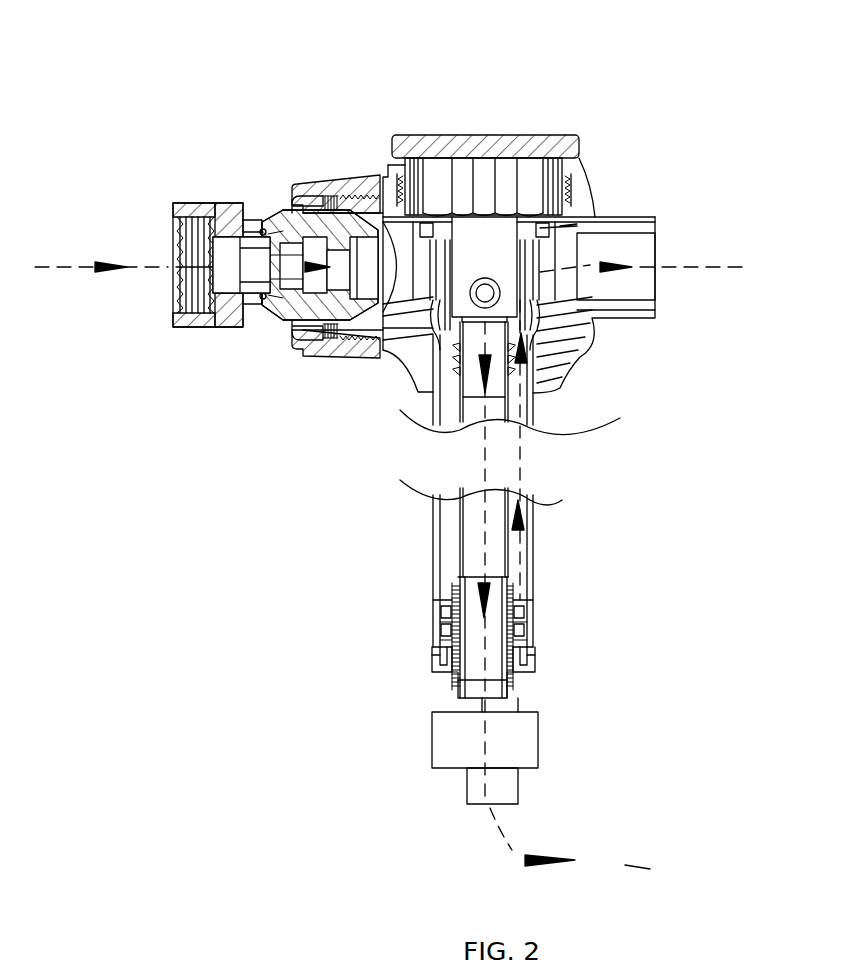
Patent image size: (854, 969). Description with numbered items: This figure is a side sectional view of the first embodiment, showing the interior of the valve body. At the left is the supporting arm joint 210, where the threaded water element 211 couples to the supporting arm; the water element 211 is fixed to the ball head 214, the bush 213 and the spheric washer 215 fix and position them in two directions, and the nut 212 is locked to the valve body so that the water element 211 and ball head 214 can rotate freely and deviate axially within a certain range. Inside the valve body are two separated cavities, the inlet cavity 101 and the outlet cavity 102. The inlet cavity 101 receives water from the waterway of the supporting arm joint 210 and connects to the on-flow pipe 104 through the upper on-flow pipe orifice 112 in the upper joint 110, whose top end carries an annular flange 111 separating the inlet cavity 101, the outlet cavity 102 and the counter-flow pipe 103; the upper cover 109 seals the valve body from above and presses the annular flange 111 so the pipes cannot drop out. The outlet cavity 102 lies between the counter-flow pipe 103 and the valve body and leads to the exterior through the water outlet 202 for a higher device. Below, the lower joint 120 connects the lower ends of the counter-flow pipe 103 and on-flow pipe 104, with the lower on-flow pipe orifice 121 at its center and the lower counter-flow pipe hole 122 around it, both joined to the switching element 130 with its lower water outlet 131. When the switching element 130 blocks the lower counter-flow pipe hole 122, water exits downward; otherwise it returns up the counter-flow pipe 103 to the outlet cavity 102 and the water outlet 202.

The supporting arm joint 210 is at (232, 152).
The water element 211 is at (215, 340).
The nut 212 is at (318, 190).
The bush 213 is at (292, 325).
The ball head 214 is at (268, 308).
The spheric washer 215 is at (352, 178).
The inlet cavity 101 is at (480, 253).
The upper cover 109 is at (486, 152).
The upper joint 110 is at (532, 310).
The annular flange 111 is at (567, 227).
The water outlet 202 is at (652, 308).
The outlet cavity 102 is at (587, 350).
The upper on-flow pipe orifice 112 is at (497, 372).
The counter-flow pipe 103 is at (435, 593).
The on-flow pipe 104 is at (503, 570).
The lower joint 120 is at (512, 655).
The lower on-flow pipe orifice 121 is at (472, 668).
The lower counter-flow pipe hole 122 is at (435, 663).
The switching element 130 is at (530, 747).
The lower water outlet 131 is at (480, 795).